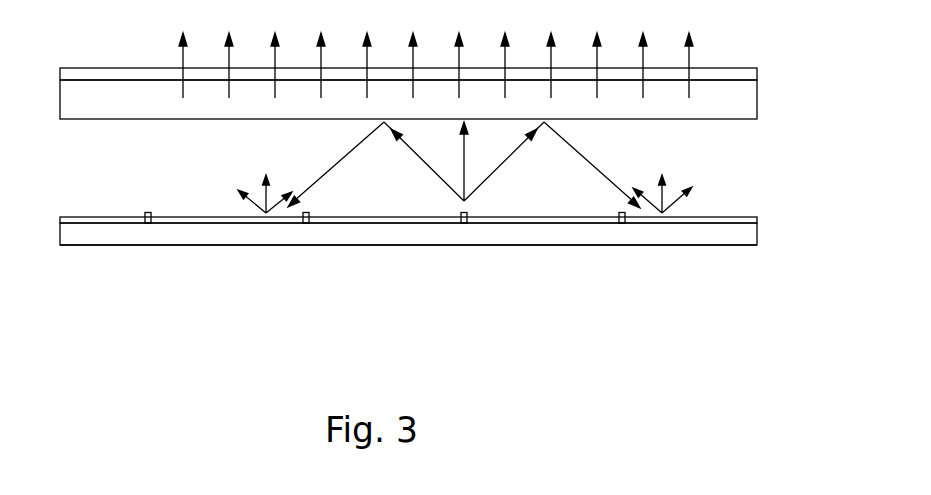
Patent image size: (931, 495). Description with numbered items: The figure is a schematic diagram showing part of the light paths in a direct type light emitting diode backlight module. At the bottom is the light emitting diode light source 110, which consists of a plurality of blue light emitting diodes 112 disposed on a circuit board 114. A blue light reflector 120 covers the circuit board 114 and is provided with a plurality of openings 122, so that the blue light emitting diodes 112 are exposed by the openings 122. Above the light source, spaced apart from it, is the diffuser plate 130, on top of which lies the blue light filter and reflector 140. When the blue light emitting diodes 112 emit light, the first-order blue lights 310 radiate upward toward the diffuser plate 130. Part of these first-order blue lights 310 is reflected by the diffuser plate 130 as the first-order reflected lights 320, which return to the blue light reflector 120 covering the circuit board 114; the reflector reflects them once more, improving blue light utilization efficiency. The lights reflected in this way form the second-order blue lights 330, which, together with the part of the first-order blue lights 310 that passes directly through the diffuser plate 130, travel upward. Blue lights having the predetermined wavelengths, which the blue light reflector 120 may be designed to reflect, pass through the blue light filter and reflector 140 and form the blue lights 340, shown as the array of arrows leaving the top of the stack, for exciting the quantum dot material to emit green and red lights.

The light emitting diode light source 110 is at (757, 232).
The blue light emitting diodes 112 is at (148, 224).
The circuit board 114 is at (72, 233).
The blue light reflector 120 is at (757, 221).
The openings 122 is at (131, 209).
The diffuser plate 130 is at (757, 98).
The blue light filter and reflector 140 is at (757, 70).
The first-order blue lights 310 is at (493, 175).
The first-order reflected lights 320 is at (577, 154).
The second-order blue lights 330 is at (677, 202).
The blue lights 340 is at (689, 55).